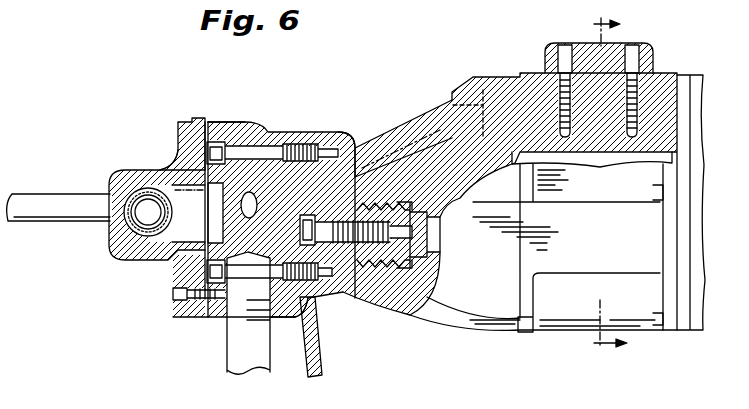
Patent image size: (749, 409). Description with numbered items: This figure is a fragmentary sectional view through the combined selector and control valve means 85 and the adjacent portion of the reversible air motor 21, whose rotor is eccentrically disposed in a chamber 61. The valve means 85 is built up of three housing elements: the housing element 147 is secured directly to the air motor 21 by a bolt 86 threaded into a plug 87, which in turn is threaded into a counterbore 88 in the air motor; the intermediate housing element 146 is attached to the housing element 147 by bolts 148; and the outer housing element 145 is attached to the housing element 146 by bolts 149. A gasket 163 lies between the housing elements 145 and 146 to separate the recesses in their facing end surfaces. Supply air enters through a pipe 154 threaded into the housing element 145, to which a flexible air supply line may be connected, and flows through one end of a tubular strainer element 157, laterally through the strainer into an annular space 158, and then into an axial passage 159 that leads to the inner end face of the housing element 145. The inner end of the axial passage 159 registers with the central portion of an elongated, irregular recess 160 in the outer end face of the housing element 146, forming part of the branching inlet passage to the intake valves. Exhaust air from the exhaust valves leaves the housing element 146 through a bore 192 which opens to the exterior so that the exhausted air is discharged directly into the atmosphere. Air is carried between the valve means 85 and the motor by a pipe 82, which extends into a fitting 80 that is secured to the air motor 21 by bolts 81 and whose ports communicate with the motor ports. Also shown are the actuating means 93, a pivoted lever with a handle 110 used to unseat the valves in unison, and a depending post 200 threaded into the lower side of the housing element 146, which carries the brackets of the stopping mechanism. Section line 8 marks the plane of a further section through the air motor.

The pipe 154 is at (45, 196).
The annular space 158 is at (119, 180).
The tubular strainer element 157 is at (128, 246).
The housing element 145 is at (185, 123).
The gasket 163 is at (174, 150).
The recess 160 is at (182, 247).
The axial passage 159 is at (177, 240).
The bolts 149 is at (180, 313).
The combined selector and control valve means 85 is at (251, 123).
The housing element 146 is at (228, 122).
The bore 192 is at (252, 193).
The bolts 148 is at (290, 157).
The housing element 147 is at (344, 133).
The pipe 82 is at (453, 104).
The air motor 21 is at (666, 73).
The fitting 80 is at (602, 44).
The bolts 81 is at (563, 46).
The chamber 61 is at (675, 152).
The section line 8- 8 is at (604, 185).
The bolt 86 is at (350, 264).
The plug 87 is at (392, 305).
The counterbore 88 is at (367, 300).
The depending post 200 is at (233, 353).
The actuating means 93 is at (300, 305).
The handle 110 is at (315, 378).